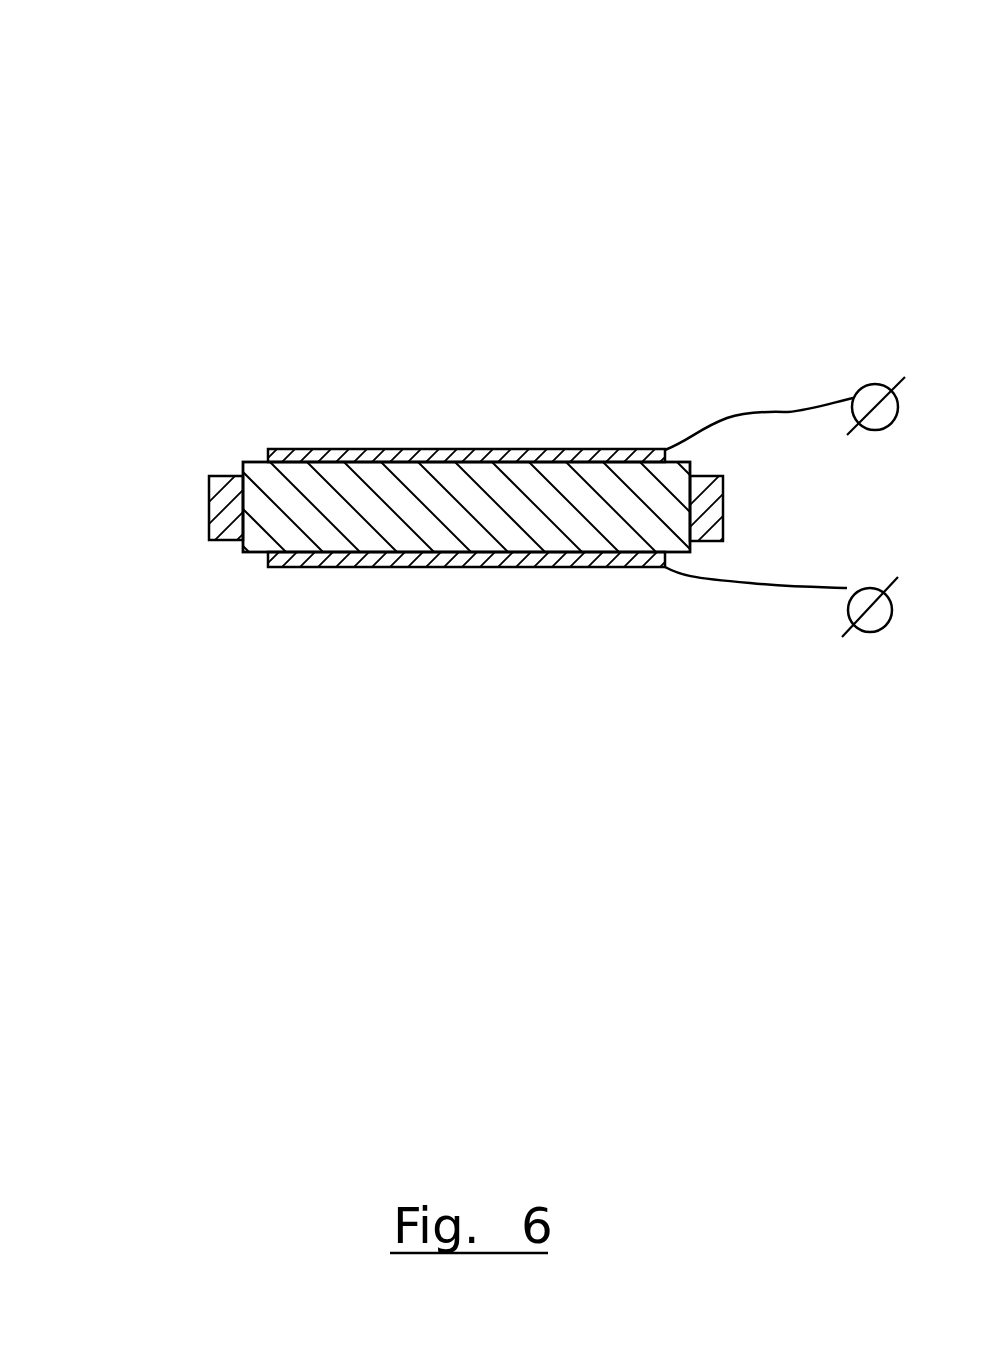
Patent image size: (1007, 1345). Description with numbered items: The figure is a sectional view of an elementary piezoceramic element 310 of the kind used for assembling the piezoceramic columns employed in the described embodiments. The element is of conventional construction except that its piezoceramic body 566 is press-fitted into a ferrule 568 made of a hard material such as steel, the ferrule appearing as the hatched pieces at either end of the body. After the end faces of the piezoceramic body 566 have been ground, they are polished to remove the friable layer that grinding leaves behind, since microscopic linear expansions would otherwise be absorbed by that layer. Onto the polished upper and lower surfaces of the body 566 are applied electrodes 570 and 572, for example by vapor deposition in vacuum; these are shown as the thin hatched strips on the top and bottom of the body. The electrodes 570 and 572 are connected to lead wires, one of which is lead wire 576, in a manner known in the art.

The elementary piezoceramic element 310 is at (230, 186).
The piezoceramic body 566 is at (450, 498).
The ferrule 568 is at (213, 475).
The electrode 570 is at (345, 450).
The electrode 572 is at (470, 568).
The lead wire 576 is at (788, 412).